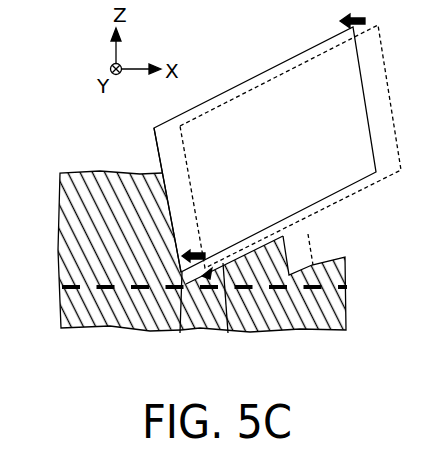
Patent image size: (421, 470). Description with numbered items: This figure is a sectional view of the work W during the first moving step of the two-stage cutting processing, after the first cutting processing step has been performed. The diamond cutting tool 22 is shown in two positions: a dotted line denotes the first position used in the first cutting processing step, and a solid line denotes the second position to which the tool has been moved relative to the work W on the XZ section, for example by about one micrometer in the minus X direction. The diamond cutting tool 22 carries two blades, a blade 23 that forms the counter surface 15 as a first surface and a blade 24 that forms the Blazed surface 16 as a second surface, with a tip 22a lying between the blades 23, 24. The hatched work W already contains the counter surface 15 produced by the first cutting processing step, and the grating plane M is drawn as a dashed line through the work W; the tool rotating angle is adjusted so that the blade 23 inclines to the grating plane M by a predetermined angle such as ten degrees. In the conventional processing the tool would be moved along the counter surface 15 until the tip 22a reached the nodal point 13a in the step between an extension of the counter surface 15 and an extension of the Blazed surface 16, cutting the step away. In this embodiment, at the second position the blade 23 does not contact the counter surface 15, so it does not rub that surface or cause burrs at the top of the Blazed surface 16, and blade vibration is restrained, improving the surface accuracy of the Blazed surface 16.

The diamond cutting tool 22 is at (279, 65).
The tip 22a is at (228, 333).
The blade 24 is at (170, 202).
The blade 23 is at (217, 228).
The counter surface 15 is at (263, 244).
The Blazed surface 16 is at (289, 258).
The nodal point 13a is at (180, 333).
The work W is at (78, 262).
The grating plane M is at (110, 289).